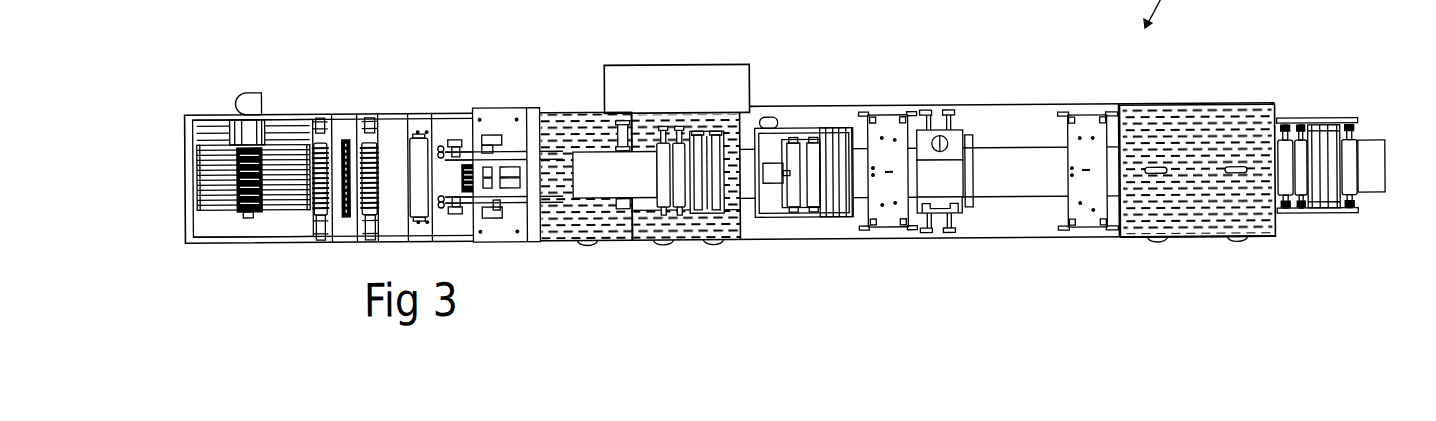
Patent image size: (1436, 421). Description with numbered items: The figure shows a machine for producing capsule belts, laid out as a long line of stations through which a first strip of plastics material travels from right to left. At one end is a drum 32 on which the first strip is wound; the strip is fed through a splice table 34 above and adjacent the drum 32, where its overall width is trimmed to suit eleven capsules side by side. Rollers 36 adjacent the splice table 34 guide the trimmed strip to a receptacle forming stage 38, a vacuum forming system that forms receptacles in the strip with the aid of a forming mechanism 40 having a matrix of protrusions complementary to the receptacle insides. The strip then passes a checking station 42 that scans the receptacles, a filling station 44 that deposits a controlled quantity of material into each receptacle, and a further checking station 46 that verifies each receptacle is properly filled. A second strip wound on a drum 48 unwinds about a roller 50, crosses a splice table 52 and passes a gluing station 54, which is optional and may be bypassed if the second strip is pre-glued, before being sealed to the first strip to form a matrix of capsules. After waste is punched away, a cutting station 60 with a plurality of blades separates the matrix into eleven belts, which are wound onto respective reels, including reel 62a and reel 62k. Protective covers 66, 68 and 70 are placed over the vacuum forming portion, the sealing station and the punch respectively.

The drum 32 is at (1375, 188).
The splice table 34 is at (1334, 141).
The rollers 36 is at (1290, 217).
The receptacle forming stage 38 is at (1197, 171).
The forming mechanism 40 is at (1196, 170).
The checking station 42 is at (1087, 139).
The filling station 44 is at (937, 142).
The further checking station 46 is at (893, 138).
The drum 48 is at (607, 162).
The roller 50 is at (677, 200).
The splice table 52 is at (713, 130).
The gluing station 54 is at (819, 131).
The cutting station 60 is at (365, 98).
The reel 62a is at (193, 207).
The reel 62k is at (193, 153).
The protective cover 66 is at (1187, 235).
The protective cover 68 is at (692, 227).
The protective cover 70 is at (557, 231).